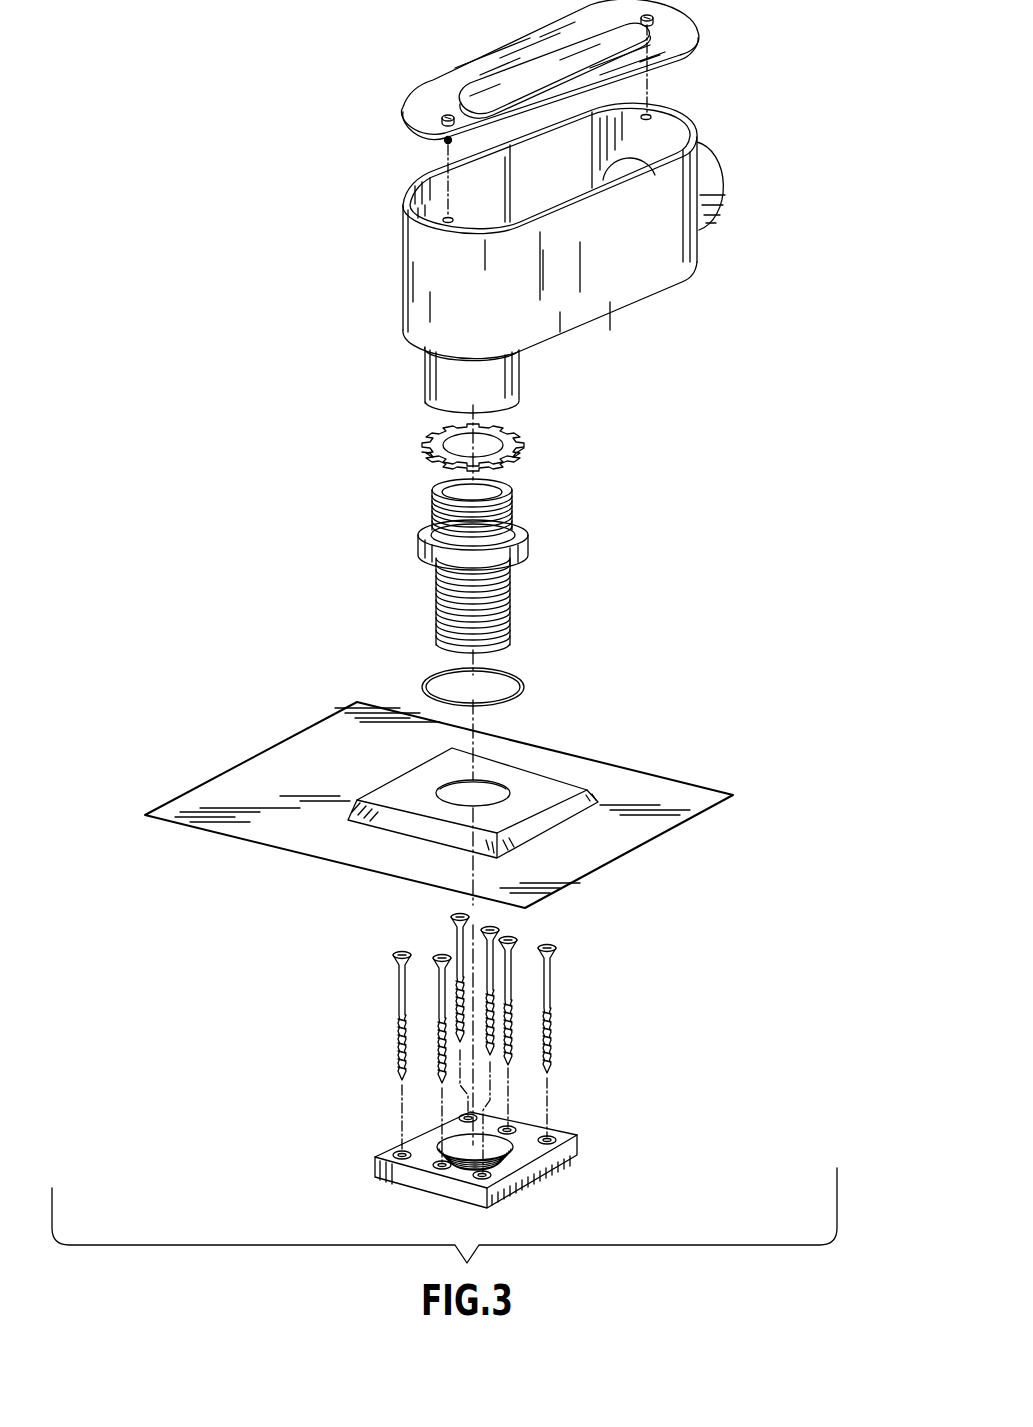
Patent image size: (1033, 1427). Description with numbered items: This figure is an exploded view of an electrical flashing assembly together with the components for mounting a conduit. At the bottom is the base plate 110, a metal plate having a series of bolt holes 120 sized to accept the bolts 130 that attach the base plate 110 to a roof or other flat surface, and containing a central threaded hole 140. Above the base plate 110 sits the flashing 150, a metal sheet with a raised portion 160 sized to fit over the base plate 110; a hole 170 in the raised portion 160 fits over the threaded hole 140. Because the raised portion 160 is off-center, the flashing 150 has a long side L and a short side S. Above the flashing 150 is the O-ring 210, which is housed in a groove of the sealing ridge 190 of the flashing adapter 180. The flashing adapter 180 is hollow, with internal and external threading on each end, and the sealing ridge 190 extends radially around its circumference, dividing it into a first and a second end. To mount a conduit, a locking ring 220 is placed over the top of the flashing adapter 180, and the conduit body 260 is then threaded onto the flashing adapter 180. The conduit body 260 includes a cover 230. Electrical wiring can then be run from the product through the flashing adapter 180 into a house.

The base plate 110 is at (522, 1180).
The bolt holes 120 is at (548, 1138).
The bolts 130 is at (553, 982).
The threaded hole 140 is at (463, 1153).
The flashing 150 is at (255, 842).
The raised portion 160 is at (393, 825).
The hole 170 is at (493, 785).
The flashing adapter 180 is at (513, 580).
The sealing ridge 190 is at (423, 543).
The O-ring 210 is at (517, 673).
The locking ring 220 is at (527, 441).
The cover 230 is at (690, 38).
The conduit body 260 is at (697, 255).
The long side L is at (308, 860).
The short side S is at (590, 873).